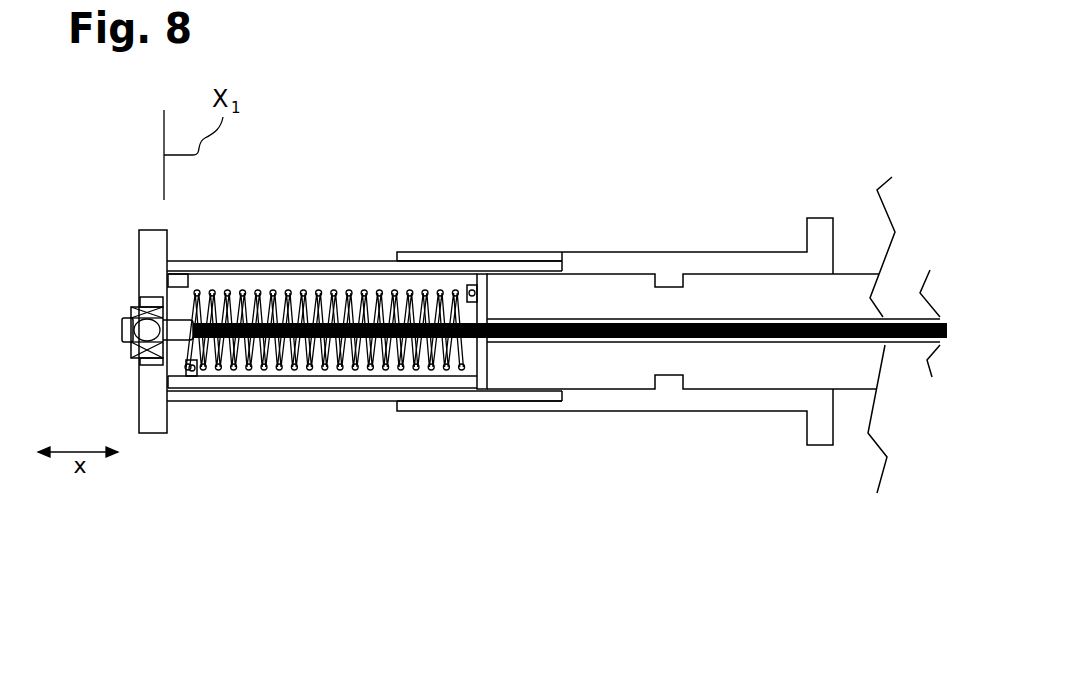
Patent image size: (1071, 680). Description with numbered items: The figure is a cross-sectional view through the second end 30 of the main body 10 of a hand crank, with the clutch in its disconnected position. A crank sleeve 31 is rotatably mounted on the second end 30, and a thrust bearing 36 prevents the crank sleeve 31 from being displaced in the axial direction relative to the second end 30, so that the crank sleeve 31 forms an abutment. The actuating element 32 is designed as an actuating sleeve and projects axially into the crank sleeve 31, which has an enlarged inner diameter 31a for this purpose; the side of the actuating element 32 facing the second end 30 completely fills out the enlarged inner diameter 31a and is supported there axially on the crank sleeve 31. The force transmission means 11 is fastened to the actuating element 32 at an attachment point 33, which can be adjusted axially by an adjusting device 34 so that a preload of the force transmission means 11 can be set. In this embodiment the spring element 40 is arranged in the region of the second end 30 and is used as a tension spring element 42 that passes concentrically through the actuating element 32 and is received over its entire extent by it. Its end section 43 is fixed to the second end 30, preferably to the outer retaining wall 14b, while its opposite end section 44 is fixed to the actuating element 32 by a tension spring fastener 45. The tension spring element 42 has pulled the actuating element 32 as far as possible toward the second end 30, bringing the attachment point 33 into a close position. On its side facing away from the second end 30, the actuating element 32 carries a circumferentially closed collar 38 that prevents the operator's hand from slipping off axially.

The main body 10 is at (853, 390).
The force transmission means 11 is at (902, 317).
The outer retaining wall 14b is at (488, 366).
The second end 30 is at (209, 251).
The crank sleeve 31 is at (615, 273).
The enlarged inner diameter 31a is at (565, 265).
The actuating element 32 is at (357, 261).
The attachment point 33 is at (188, 296).
The adjusting device 34 is at (133, 310).
The thrust bearing 36 is at (668, 286).
The collar 38 is at (168, 434).
The spring element 40 is at (325, 405).
The tension spring element 42 is at (353, 372).
The end section 43 is at (191, 389).
The opposite end section 44 is at (474, 284).
The tension spring fastener 45 is at (467, 292).